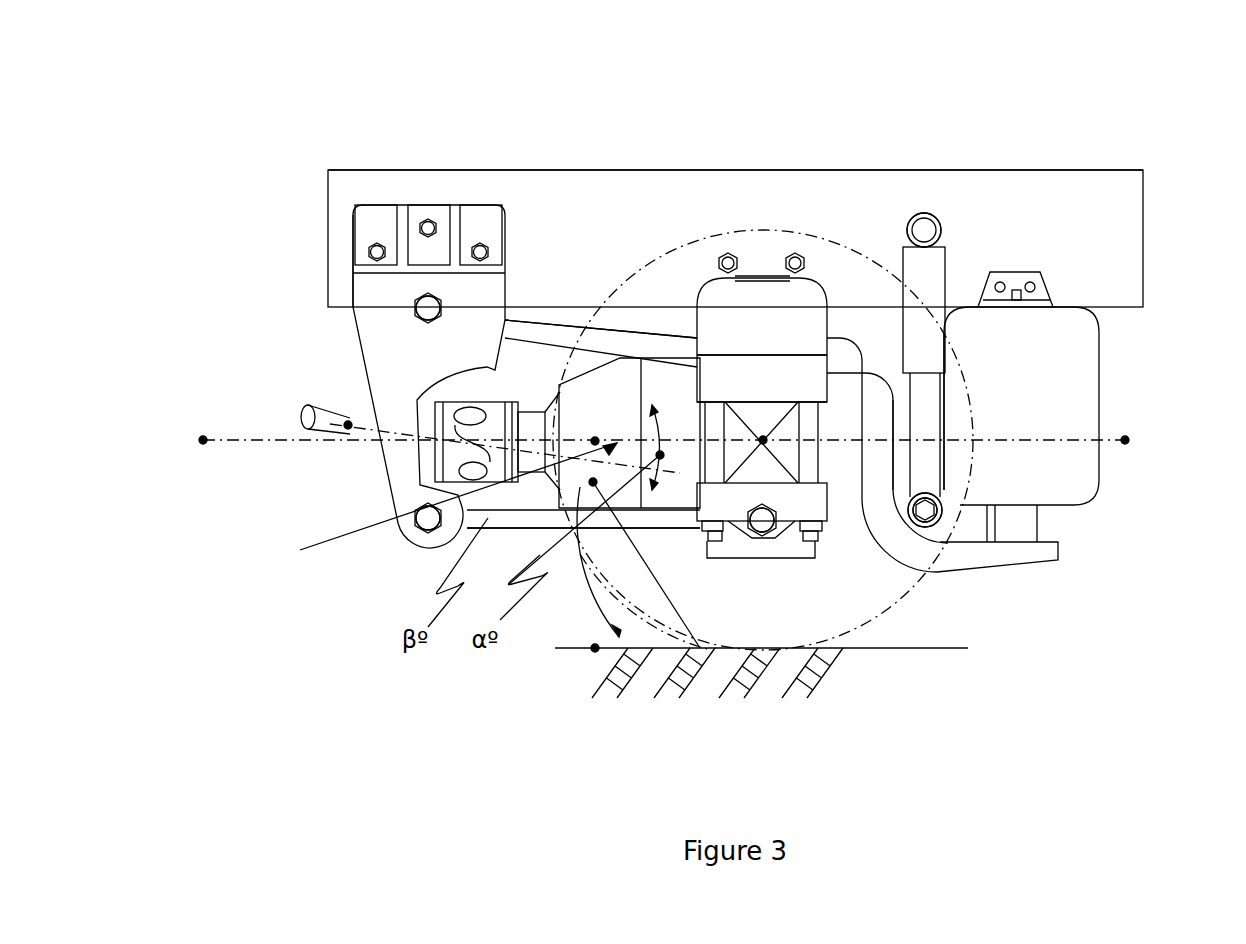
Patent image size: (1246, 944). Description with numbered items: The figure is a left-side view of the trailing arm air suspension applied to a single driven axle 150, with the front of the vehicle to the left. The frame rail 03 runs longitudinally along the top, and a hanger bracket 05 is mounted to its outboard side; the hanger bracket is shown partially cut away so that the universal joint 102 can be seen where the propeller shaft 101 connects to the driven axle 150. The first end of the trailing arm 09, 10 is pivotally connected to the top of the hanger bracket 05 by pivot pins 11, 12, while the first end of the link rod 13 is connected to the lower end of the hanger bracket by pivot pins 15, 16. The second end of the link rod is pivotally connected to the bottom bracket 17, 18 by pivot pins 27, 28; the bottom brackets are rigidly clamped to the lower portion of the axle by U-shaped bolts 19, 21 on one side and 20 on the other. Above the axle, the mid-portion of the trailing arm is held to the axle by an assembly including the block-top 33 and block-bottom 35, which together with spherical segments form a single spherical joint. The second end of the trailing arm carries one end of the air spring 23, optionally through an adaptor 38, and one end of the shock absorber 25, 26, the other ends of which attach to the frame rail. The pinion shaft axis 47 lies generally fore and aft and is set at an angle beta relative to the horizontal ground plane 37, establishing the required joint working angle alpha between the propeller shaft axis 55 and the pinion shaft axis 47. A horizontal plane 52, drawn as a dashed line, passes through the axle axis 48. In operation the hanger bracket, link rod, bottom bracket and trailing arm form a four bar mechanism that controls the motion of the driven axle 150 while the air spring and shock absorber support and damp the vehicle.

The frame rail 03 is at (952, 190).
The hanger bracket 05 is at (405, 380).
The trailing arm 09 is at (558, 333).
The trailing arm 10 is at (601, 329).
The pivot pin 11 is at (428, 308).
The pivot pin 12 is at (428, 308).
The link rod 13 is at (593, 482).
The pivot pin 15 is at (428, 518).
The pivot pin 16 is at (428, 518).
The bottom bracket 17 is at (795, 505).
The bottom bracket 18 is at (762, 520).
The U-shaped bolt 19 is at (838, 455).
The U-shaped bolt 20 is at (925, 510).
The U-shaped bolt 21 is at (925, 510).
The air spring 23 is at (1043, 475).
The shock absorber 25 is at (923, 458).
The shock absorber 26 is at (924, 230).
The pivot pin 27 is at (760, 538).
The pivot pin 28 is at (763, 440).
The block-top 33 is at (735, 325).
The block-bottom 35 is at (793, 380).
The horizontal ground plane 37 is at (595, 648).
The adaptor 38 is at (1010, 528).
The pinion shaft axis 47 is at (465, 460).
The axle axis 48 is at (706, 540).
The horizontal plane 52 is at (203, 440).
The propeller shaft axis 55 is at (348, 425).
The propeller shaft 101 is at (348, 410).
The universal joint 102 is at (445, 438).
The driven axle 150 is at (655, 378).